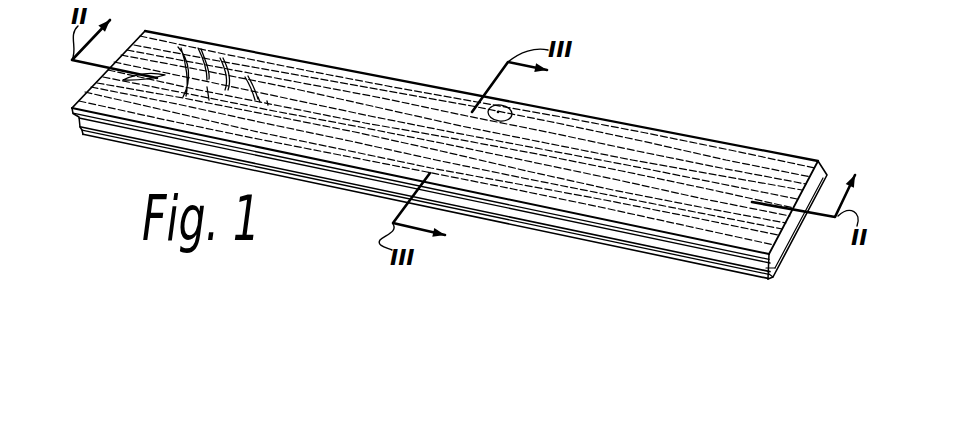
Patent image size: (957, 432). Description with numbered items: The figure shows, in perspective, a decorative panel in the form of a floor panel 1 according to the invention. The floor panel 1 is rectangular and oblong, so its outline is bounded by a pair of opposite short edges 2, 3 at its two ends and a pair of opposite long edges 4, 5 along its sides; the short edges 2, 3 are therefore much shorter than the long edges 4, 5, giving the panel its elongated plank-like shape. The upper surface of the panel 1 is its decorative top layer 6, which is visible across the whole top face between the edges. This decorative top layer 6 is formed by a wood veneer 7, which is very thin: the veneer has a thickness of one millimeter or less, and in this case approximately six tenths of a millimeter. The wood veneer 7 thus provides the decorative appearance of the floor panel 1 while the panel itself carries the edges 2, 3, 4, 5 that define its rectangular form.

The floor panel 1 is at (683, 117).
The short edge 2 is at (90, 88).
The short edge 3 is at (824, 160).
The long edge 4 is at (743, 148).
The long edge 5 is at (620, 247).
The decorative top layer 6 is at (300, 103).
The wood veneer 7 is at (563, 158).